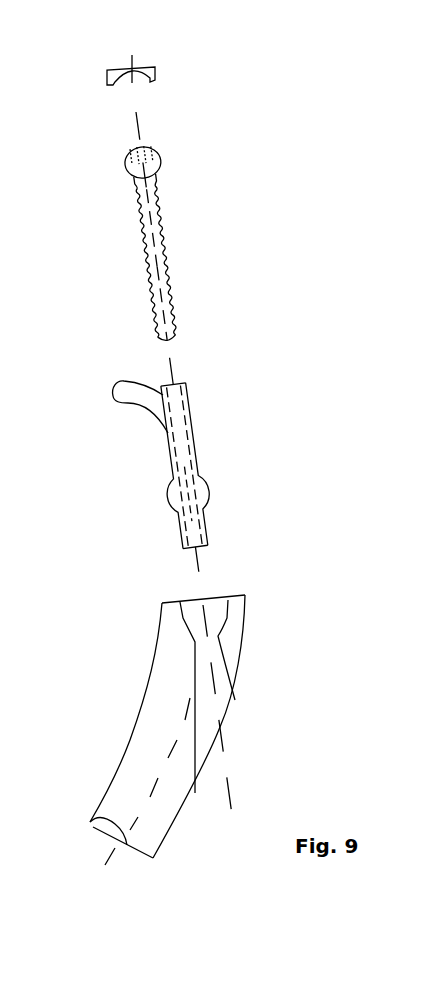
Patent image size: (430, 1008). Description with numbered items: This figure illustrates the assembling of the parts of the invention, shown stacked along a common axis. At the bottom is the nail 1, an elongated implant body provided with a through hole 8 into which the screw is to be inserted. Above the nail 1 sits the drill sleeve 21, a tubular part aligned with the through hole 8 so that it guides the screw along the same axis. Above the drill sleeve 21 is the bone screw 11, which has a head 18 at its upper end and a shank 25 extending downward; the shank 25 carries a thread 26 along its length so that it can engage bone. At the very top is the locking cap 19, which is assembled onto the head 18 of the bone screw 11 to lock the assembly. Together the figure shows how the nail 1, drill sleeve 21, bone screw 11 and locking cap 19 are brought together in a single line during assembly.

The nail 1 is at (198, 730).
The through hole 8 is at (220, 680).
The bone screw 11 is at (186, 221).
The head 18 is at (155, 160).
The locking cap 19 is at (155, 78).
The drill sleeve 21 is at (191, 413).
The shank 25 is at (160, 260).
The thread 26 is at (172, 308).